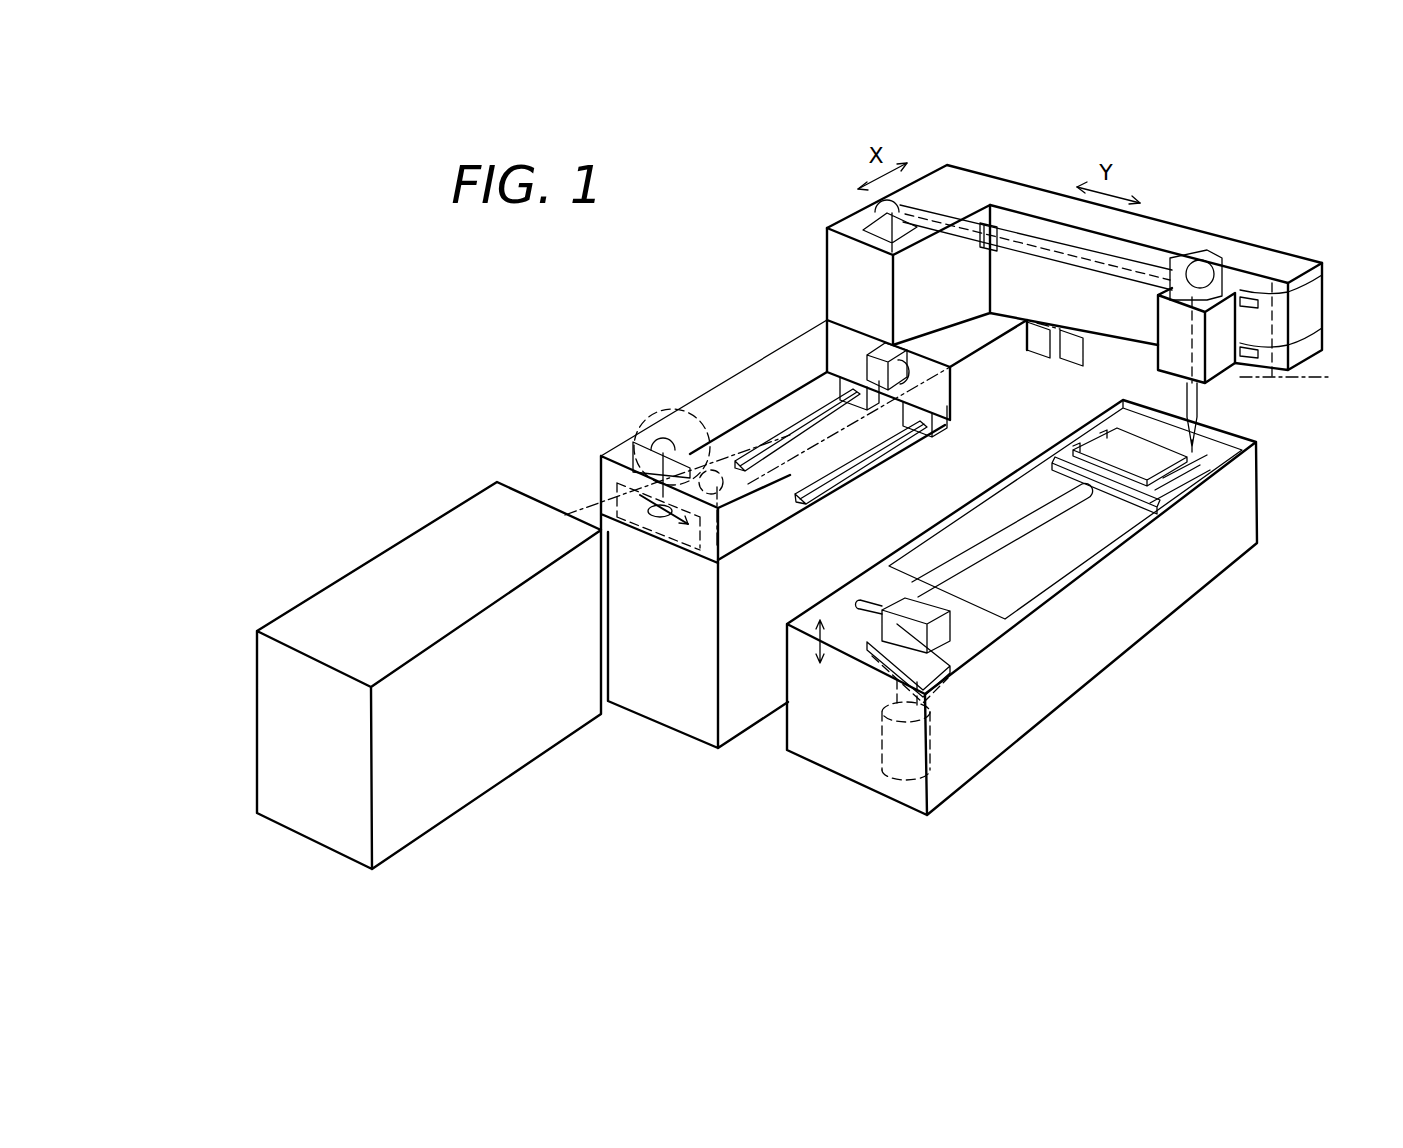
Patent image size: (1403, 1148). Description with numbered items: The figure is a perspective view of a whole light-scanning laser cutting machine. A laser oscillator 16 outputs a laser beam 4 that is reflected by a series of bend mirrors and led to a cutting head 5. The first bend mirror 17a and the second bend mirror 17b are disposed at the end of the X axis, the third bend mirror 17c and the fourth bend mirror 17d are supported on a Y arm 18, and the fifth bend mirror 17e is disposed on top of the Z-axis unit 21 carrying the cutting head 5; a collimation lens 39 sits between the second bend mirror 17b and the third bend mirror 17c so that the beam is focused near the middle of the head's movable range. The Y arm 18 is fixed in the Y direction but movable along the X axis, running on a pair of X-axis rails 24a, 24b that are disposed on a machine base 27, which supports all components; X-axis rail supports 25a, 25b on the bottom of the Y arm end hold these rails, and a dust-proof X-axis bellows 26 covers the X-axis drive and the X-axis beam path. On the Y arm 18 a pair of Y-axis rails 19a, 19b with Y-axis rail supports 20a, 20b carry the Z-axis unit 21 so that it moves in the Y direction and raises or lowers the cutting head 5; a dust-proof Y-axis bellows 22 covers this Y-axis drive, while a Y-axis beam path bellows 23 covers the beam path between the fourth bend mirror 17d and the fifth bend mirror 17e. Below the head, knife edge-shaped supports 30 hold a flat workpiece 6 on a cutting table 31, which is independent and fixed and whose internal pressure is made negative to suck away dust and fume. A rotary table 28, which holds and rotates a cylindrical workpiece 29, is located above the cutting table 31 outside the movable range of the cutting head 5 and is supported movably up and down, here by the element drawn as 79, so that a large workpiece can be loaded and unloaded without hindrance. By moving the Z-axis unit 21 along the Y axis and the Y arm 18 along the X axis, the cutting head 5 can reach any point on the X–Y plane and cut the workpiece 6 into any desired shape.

The laser beam 4 is at (595, 504).
The cutting head 5 is at (1203, 403).
The workpiece 6 is at (1098, 450).
The laser oscillator 16 is at (402, 566).
The first bend mirror 17a is at (648, 440).
The second bend mirror 17b is at (663, 520).
The third bend mirror 17c is at (905, 372).
The fourth bend mirror 17d is at (880, 208).
The fifth bend mirror 17e is at (1214, 268).
The Y arm 18 is at (1207, 242).
The Y-axis rail 19a is at (1302, 289).
The Y-axis rail 19b is at (1300, 348).
The Y-axis rail support 20a is at (1290, 304).
The Y-axis rail support 20b is at (1243, 358).
The Z-axis unit 21 is at (1158, 364).
The Y-axis bellows 22 is at (1300, 340).
The Y-axis beam path bellows 23 is at (955, 237).
The X-axis rail 24a is at (857, 467).
The X-axis rail 24b is at (808, 420).
The X-axis rail support 25a is at (942, 425).
The X-axis rail support 25b is at (838, 396).
The X-axis bellows 26 is at (725, 395).
The machine base 27 is at (667, 703).
The rotary table 28 is at (942, 626).
The cylindrical workpiece 29 is at (1008, 537).
The knife edge-shaped supports 30 is at (1048, 469).
The cutting table 31 is at (1164, 596).
The collimation lens 39 is at (666, 410).
The cylinder 79 is at (935, 744).